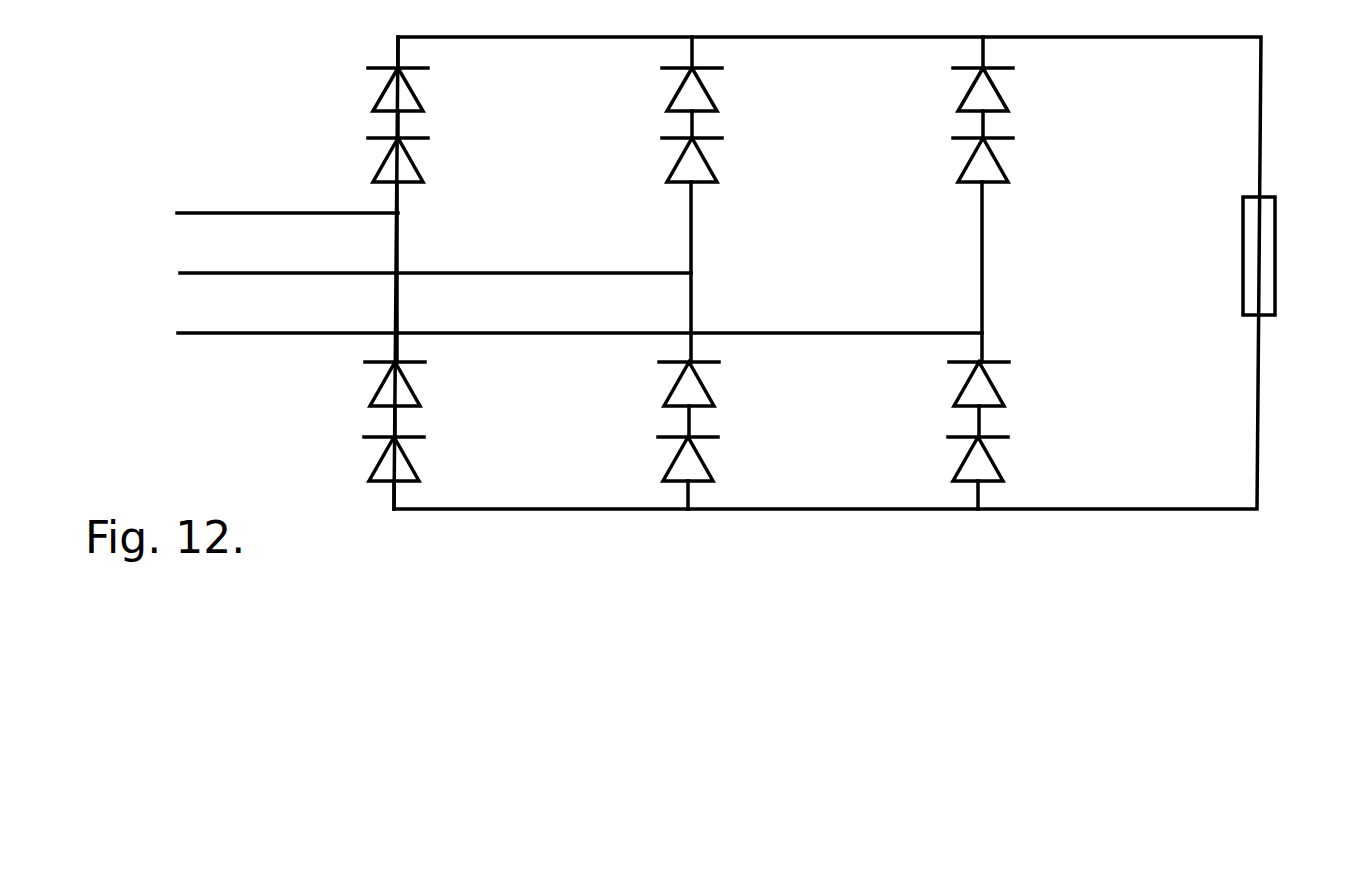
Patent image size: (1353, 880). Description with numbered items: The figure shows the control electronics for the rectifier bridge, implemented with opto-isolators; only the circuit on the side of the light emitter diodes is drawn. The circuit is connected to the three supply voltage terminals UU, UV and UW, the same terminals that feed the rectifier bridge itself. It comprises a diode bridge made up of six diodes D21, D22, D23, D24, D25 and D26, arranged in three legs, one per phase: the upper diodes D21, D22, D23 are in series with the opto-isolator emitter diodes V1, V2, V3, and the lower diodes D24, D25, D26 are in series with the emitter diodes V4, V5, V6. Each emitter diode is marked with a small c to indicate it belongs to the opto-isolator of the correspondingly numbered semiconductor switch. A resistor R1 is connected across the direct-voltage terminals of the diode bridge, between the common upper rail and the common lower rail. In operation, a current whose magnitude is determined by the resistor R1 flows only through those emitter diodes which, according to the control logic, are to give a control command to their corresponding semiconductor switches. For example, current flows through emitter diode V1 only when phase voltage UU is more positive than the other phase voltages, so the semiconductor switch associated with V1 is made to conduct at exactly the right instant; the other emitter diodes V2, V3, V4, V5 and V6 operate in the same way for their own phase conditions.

The opto-isolator emitter diode V1 is at (427, 85).
The opto-isolator emitter diode V2 is at (721, 85).
The opto-isolator emitter diode V3 is at (1012, 85).
The opto-isolator emitter diode V4 is at (444, 421).
The opto-isolator emitter diode V5 is at (738, 421).
The opto-isolator emitter diode V6 is at (1028, 421).
The diode D21 is at (440, 161).
The diode D22 is at (732, 161).
The diode D23 is at (1025, 161).
The diode D24 is at (443, 379).
The diode D25 is at (729, 379).
The diode D26 is at (1020, 379).
The resistor R1 is at (1295, 273).
The supply voltage terminal UU is at (253, 211).
The supply voltage terminal UV is at (399, 269).
The supply voltage terminal UW is at (545, 331).